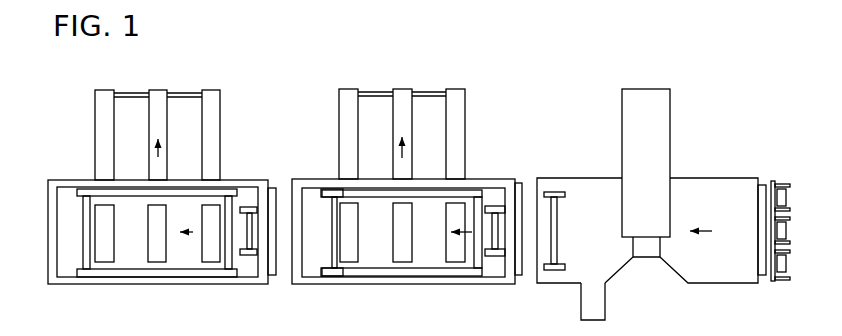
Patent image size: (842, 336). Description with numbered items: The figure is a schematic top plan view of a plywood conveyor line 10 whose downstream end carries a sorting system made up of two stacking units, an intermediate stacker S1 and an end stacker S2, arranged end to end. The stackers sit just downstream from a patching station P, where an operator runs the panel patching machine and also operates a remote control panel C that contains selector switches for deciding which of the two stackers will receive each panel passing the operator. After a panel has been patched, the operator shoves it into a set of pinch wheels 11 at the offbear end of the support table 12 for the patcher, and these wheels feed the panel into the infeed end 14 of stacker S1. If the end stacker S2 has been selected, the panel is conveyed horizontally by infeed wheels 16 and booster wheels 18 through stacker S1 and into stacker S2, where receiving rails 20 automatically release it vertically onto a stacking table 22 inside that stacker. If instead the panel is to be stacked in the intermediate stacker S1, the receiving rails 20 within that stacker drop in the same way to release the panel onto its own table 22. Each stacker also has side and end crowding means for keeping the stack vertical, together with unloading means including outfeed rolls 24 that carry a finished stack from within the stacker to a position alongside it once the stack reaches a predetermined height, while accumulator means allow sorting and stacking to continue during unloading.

The conveyor line 10 is at (542, 289).
The pinch wheels 11 is at (557, 232).
The support table 12 is at (560, 178).
The infeed end 14 is at (522, 193).
The infeed wheels 16 is at (250, 207).
The booster wheels 18 is at (330, 188).
The receiving rails 20 is at (89, 188).
The stacking table 22 is at (87, 226).
The outfeed rolls 24 is at (94, 141).
The intermediate stacker S1 is at (481, 288).
The end stacker S2 is at (144, 287).
The patching station P is at (641, 269).
The control panel C is at (606, 313).